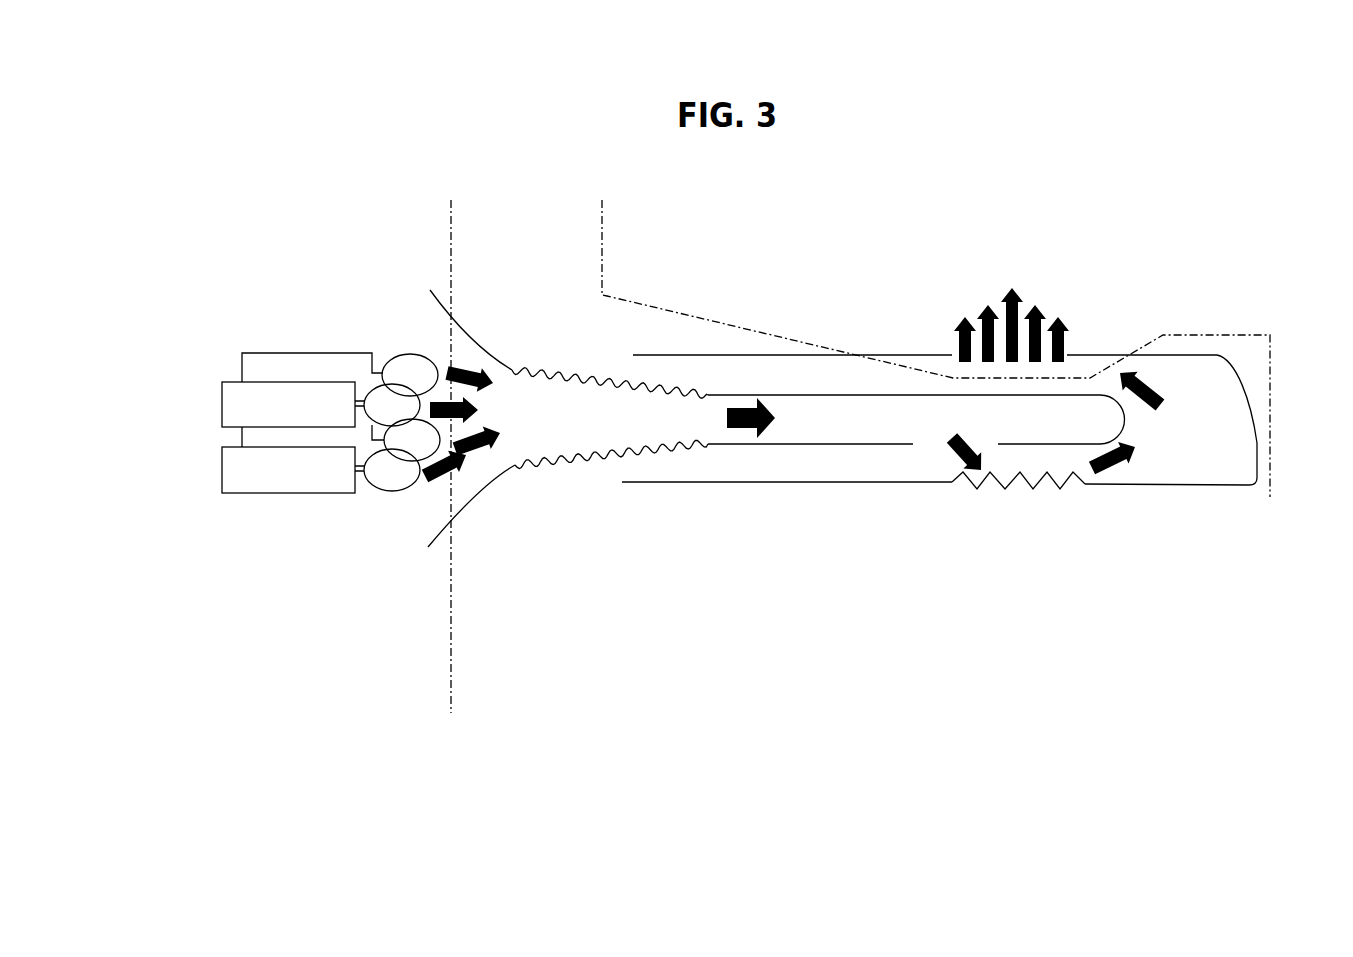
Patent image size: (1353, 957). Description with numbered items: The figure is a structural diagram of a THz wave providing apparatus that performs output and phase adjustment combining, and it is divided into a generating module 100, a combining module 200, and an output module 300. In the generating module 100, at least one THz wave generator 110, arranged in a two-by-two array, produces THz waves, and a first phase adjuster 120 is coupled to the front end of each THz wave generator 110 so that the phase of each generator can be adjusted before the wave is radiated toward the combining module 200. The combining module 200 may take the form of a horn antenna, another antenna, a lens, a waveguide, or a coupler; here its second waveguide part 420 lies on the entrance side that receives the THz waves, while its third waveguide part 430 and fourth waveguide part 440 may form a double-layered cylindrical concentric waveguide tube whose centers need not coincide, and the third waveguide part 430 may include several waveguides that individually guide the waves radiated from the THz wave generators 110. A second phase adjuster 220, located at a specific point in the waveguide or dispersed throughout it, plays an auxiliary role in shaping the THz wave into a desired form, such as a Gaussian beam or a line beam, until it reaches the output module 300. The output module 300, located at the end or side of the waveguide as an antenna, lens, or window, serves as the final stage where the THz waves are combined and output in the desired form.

The generating module 100 is at (333, 697).
The THz wave generator 110 is at (222, 470).
The first phase adjuster 120 is at (405, 353).
The combining module 200 is at (927, 697).
The second phase adjuster 220 is at (552, 455).
The output module 300 is at (992, 199).
The second waveguide part 420 is at (478, 348).
The third waveguide part 430 is at (811, 445).
The fourth waveguide part 440 is at (1257, 441).